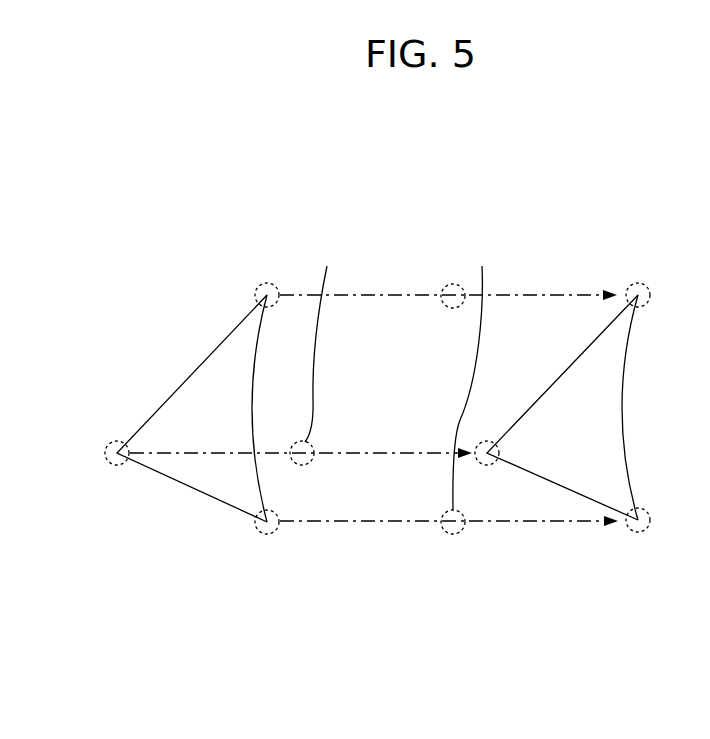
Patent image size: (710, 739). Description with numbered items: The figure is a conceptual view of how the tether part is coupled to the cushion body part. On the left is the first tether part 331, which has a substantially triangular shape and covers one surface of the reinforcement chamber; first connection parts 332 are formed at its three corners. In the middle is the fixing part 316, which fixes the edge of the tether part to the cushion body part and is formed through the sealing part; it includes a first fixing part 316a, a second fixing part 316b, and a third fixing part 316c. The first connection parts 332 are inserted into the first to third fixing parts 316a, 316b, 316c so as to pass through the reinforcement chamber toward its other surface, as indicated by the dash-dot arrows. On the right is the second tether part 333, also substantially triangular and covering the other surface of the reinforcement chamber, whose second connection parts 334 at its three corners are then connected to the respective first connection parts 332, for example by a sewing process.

The fixing part 316 is at (317, 238).
The first fixing part 316a is at (442, 290).
The second fixing part 316b is at (463, 386).
The third fixing part 316c is at (322, 351).
The first tether part 331 is at (186, 364).
The first connection parts 332 is at (258, 284).
The second tether part 333 is at (552, 377).
The second connection parts 334 is at (628, 284).